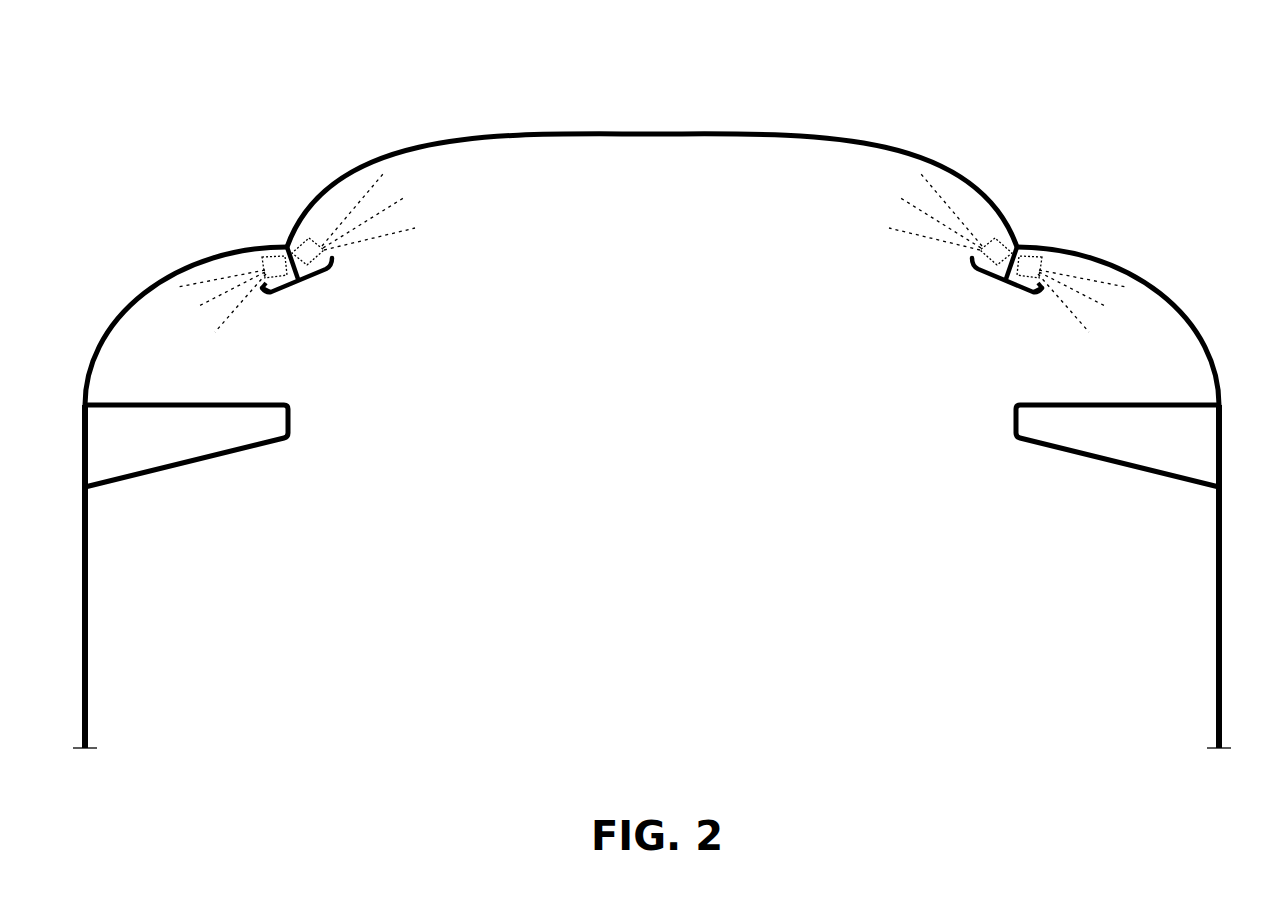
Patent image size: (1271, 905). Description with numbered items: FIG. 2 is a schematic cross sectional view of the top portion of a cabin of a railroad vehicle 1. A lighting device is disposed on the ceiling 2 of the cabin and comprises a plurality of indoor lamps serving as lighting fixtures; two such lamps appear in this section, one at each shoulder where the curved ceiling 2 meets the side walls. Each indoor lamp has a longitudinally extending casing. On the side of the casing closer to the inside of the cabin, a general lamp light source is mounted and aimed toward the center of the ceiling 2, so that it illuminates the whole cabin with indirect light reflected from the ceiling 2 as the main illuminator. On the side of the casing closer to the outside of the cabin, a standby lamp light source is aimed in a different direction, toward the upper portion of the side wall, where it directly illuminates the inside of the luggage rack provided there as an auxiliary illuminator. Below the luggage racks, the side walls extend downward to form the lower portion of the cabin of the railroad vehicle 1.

The railroad vehicle 1 is at (652, 392).
The ceiling 2 is at (663, 137).